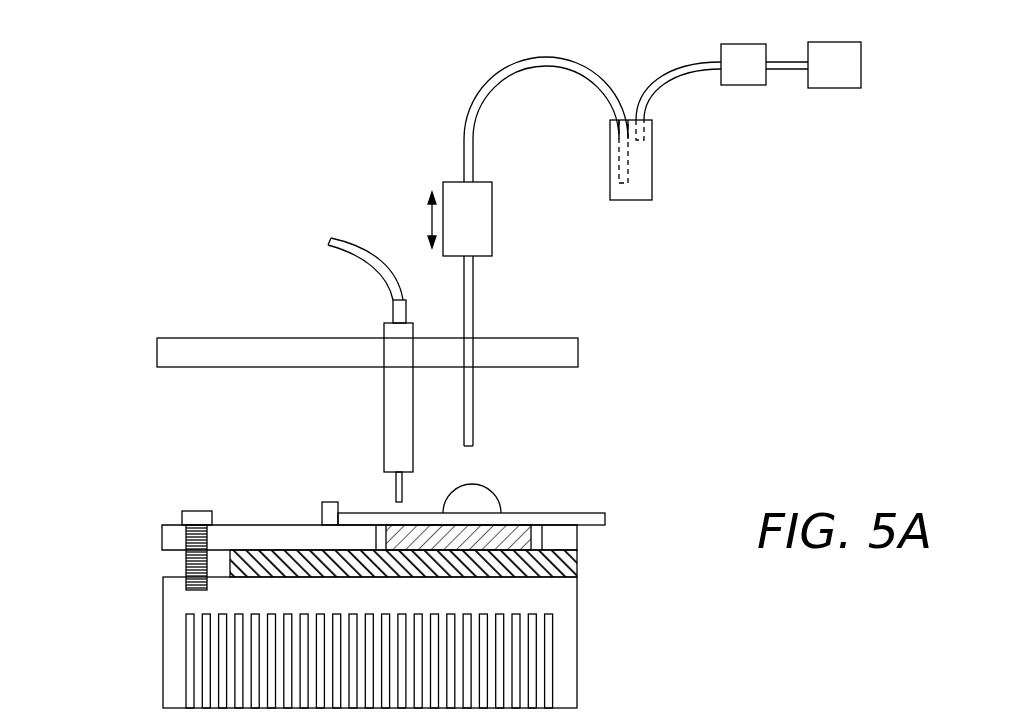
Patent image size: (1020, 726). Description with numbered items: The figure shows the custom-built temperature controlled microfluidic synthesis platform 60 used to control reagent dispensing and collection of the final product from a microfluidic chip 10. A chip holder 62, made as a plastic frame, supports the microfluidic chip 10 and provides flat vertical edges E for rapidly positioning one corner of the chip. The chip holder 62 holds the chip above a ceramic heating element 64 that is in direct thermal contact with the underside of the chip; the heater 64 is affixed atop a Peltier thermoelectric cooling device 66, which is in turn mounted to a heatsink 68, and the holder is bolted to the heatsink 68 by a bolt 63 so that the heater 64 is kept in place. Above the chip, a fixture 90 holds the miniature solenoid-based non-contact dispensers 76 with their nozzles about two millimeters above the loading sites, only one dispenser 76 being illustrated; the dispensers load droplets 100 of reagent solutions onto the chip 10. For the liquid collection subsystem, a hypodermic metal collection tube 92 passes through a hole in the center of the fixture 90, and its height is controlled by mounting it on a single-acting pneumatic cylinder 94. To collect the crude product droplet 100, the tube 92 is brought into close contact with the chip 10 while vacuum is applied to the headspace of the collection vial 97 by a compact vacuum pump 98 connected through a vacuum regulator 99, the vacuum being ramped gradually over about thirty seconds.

The temperature controlled synthesis platform 60 is at (50, 280).
The microfluidic chip 10 is at (593, 512).
The chip holder 62 is at (305, 525).
The bolt 63 is at (193, 511).
The heating element 64 is at (518, 547).
The thermoelectric cooling device 66 is at (515, 577).
The heatsink 68 is at (163, 648).
The non-contact dispenser 76 is at (384, 432).
The dispenser fixture 90 is at (568, 338).
The collection tube 92 is at (473, 412).
The pneumatic cylinder 94 is at (492, 231).
The collection vial 97 is at (652, 183).
The vacuum pump 98 is at (826, 88).
The vacuum regulator 99 is at (744, 44).
The droplet 100 is at (500, 491).
The flat vertical edge E is at (333, 502).